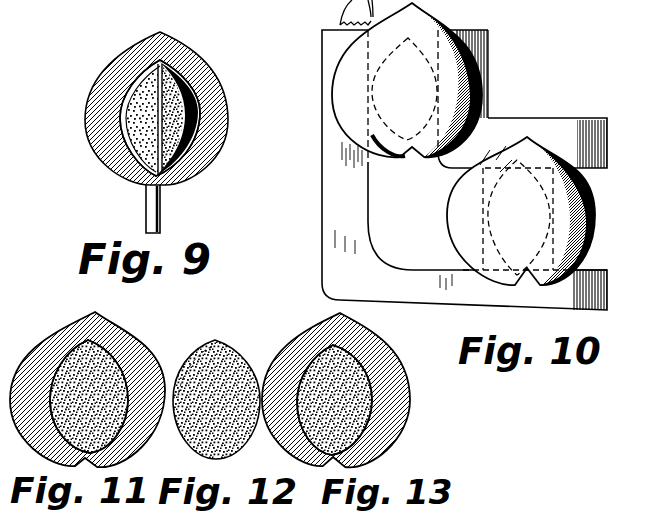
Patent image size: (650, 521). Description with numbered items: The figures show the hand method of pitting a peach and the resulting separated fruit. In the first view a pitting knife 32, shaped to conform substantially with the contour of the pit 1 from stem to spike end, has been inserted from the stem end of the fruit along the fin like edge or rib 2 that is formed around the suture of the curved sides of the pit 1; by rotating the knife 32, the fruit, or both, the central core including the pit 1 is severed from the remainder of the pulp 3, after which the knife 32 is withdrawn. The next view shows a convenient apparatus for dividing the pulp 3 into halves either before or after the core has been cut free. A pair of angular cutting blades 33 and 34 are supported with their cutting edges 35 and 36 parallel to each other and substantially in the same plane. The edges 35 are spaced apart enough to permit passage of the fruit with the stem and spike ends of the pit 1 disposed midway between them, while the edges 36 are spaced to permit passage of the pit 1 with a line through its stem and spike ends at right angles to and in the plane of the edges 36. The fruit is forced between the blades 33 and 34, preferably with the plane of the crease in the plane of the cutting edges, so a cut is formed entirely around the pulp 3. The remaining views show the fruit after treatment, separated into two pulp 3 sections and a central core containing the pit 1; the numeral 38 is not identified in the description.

In FIG. 9, the pit 1 is at (160, 132).
In FIG. 10, the pit 1 is at (414, 78).
In FIG. 12, the pit 1 is at (232, 343).
In FIG. 9, the fin like edge or rib 2 is at (125, 149).
In FIG. 9, the pulp 3 is at (217, 70).
In FIG. 10, the pulp 3 is at (474, 62).
In FIG. 11, the pulp 3 is at (43, 342).
In FIG. 13, the pulp 3 is at (390, 360).
In FIG. 9, the pitting knife 32 is at (113, 171).
In FIG. 10, the angular cutting blade 33 is at (488, 124).
In FIG. 10, the angular cutting blade 34 is at (335, 238).
In FIG. 10, the cutting edges 35 is at (404, 89).
In FIG. 10, the cutting edges 36 is at (521, 211).
In FIG. 12, the sheet numeral 38 is at (300, 513).